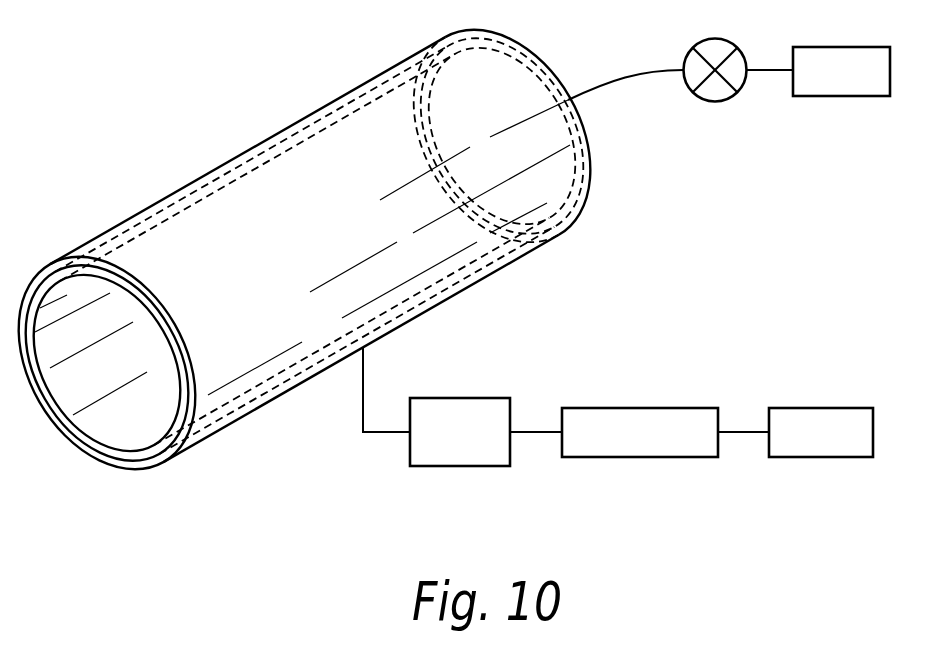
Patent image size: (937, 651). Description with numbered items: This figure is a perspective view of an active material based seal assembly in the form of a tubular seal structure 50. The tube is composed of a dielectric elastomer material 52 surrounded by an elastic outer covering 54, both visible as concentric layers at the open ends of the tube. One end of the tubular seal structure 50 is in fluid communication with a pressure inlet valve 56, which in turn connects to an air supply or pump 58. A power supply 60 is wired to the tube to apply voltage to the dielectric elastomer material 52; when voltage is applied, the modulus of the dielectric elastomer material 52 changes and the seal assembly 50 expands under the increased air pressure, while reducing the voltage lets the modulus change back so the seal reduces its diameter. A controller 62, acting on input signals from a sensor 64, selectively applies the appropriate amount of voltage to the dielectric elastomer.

The tubular seal structure 50 is at (326, 286).
The dielectric elastomer material 52 is at (97, 442).
The elastic outer covering 54 is at (121, 459).
The pressure inlet valve 56 is at (717, 102).
The air supply or pump 58 is at (842, 97).
The power supply 60 is at (475, 398).
The controller 62 is at (640, 408).
The sensor 64 is at (815, 408).